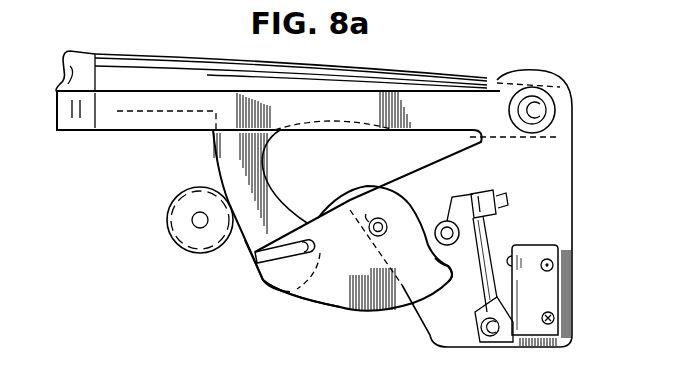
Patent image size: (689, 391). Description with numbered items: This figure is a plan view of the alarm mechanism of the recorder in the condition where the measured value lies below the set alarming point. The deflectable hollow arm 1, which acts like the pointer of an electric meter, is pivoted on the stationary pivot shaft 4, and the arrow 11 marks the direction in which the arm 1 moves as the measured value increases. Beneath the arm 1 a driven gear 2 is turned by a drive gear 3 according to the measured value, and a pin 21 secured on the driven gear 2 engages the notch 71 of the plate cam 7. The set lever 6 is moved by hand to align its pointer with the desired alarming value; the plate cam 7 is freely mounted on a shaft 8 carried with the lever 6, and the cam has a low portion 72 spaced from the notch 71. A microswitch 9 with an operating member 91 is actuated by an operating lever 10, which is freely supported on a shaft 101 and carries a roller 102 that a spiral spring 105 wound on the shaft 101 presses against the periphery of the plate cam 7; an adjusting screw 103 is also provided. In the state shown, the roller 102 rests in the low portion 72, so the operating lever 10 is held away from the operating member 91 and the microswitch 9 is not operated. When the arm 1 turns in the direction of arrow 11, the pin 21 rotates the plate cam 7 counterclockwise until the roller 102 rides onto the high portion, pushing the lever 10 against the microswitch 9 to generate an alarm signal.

The arm 1 is at (203, 61).
The arrow 11 is at (71, 113).
The lever 6 is at (143, 131).
The pivot shaft 4 is at (547, 102).
The drive gear 3 is at (180, 251).
The driven gear 2 is at (253, 255).
The notch 71 is at (258, 277).
The pin 21 is at (284, 288).
The plate cam 7 is at (357, 261).
The shaft 8 is at (369, 223).
The low portion 72 is at (443, 222).
The roller 102 is at (437, 252).
The operating lever 10 is at (465, 300).
The adjusting screw 103 is at (503, 198).
The microswitch 9 is at (568, 285).
The operating member 91 is at (508, 259).
The spiral spring 105 is at (493, 350).
The shaft 101 is at (481, 342).